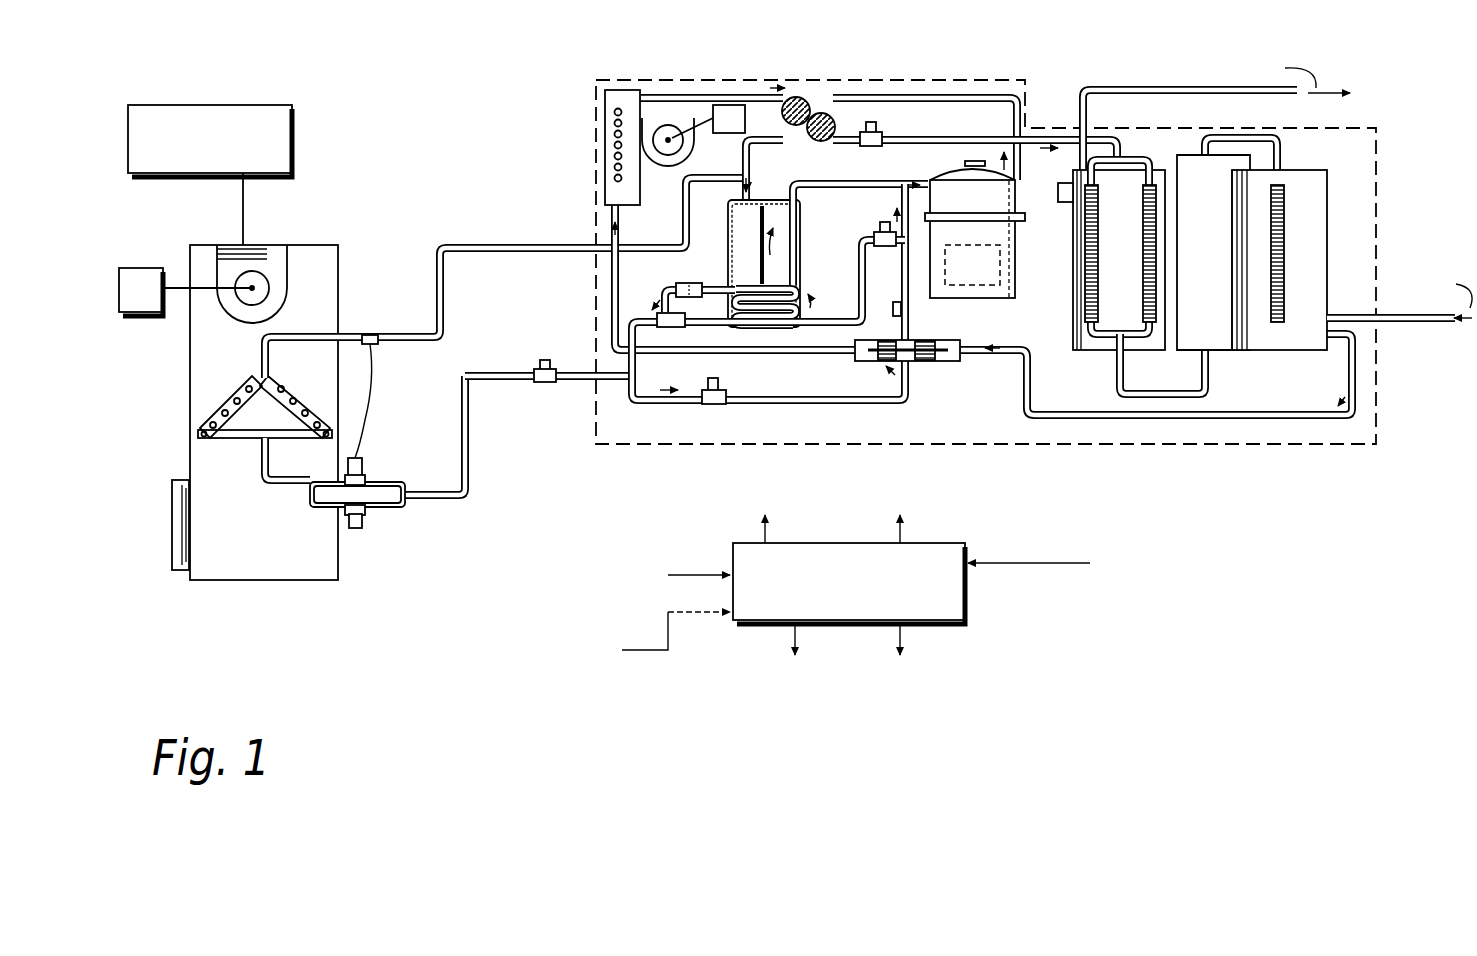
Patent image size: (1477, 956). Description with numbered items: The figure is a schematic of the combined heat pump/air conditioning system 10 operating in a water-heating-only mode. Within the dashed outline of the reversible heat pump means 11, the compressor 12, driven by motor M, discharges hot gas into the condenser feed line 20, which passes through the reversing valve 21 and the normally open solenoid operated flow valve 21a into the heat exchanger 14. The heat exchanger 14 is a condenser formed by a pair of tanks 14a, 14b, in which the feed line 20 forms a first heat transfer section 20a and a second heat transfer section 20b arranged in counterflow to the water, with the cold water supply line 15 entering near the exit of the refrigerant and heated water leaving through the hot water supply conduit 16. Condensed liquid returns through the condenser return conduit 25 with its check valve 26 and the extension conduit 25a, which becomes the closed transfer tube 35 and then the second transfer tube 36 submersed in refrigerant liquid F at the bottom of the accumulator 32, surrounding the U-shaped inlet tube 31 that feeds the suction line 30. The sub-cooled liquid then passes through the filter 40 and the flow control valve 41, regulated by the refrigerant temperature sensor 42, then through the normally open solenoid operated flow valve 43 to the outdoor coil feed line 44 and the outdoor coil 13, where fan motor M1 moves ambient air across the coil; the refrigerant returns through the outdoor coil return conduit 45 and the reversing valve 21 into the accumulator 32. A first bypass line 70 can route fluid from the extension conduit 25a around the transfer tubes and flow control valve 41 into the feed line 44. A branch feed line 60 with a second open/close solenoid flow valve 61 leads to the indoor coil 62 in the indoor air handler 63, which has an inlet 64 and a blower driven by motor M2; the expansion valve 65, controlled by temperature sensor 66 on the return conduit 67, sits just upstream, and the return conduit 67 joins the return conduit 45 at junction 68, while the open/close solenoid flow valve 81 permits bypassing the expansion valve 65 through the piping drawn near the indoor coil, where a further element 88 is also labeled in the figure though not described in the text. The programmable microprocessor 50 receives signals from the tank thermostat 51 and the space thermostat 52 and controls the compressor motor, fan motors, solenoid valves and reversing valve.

The heat pump/air conditioning system 10 is at (968, 55).
The reversible heat pump means 11 is at (1027, 110).
The compressor 12 is at (935, 292).
The outdoor coil 13 is at (632, 190).
The heat exchanger 14 is at (1100, 365).
The first tank 14a is at (1140, 344).
The second tank 14b is at (1260, 346).
The cold water supply line 15 is at (1410, 324).
The hot water supply conduit 16 is at (1088, 108).
The condenser feed line 20 is at (928, 144).
The first heat transfer section 20a is at (1076, 296).
The second heat transfer section 20b is at (1330, 228).
The reversing valve 21 is at (828, 118).
The normally open solenoid operated flow valve 21a is at (870, 152).
The condenser return conduit 25 is at (1216, 420).
The extension conduit 25a is at (904, 276).
The check valve 26 is at (935, 362).
The suction line 30 is at (800, 186).
The U-shaped inlet tube 31 is at (797, 224).
The accumulator 32 is at (728, 252).
The closed transfer tube 35 is at (893, 200).
The second transfer tube 36 is at (765, 264).
The filter 40 is at (676, 282).
The flow control valve 41 is at (680, 324).
The refrigerant temperature sensor 42 is at (893, 310).
The normally open solenoid operated flow valve 43 is at (718, 388).
The outdoor coil feed line 44 is at (700, 355).
The outdoor coil return conduit 45 is at (722, 88).
The programmable microprocessor 50 is at (712, 525).
The tank thermostat 51 is at (1065, 203).
The space thermostat 52 is at (282, 150).
The branch feed line 60 is at (558, 373).
The second open/close solenoid flow valve 61 is at (543, 384).
The indoor coil 62 is at (212, 412).
The indoor air handler 63 is at (205, 351).
The inlet 64 is at (180, 545).
The expansion valve 65 is at (364, 467).
The temperature sensor 66 is at (378, 342).
The return conduit 67 is at (444, 303).
The junction 68 is at (740, 180).
The first bypass line 70 is at (846, 346).
The open/close solenoid flow valve 81 is at (362, 525).
The distributor manifold 88 is at (388, 510).
The motor M is at (984, 288).
The motor M1 is at (693, 135).
The motor M2 is at (203, 284).
The refrigerant liquid F is at (736, 285).